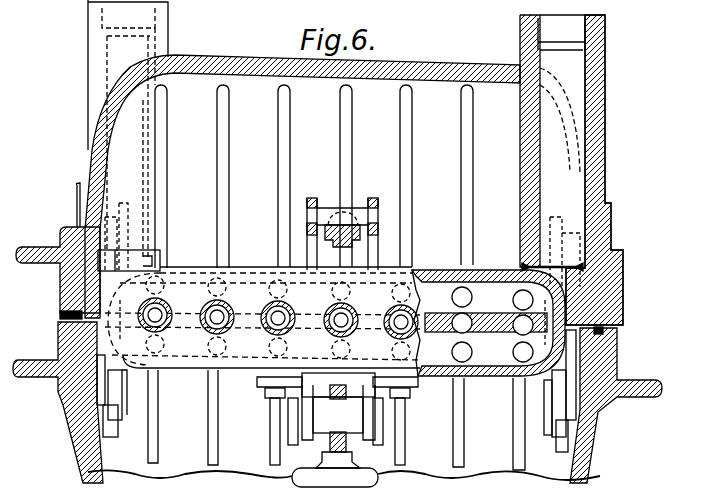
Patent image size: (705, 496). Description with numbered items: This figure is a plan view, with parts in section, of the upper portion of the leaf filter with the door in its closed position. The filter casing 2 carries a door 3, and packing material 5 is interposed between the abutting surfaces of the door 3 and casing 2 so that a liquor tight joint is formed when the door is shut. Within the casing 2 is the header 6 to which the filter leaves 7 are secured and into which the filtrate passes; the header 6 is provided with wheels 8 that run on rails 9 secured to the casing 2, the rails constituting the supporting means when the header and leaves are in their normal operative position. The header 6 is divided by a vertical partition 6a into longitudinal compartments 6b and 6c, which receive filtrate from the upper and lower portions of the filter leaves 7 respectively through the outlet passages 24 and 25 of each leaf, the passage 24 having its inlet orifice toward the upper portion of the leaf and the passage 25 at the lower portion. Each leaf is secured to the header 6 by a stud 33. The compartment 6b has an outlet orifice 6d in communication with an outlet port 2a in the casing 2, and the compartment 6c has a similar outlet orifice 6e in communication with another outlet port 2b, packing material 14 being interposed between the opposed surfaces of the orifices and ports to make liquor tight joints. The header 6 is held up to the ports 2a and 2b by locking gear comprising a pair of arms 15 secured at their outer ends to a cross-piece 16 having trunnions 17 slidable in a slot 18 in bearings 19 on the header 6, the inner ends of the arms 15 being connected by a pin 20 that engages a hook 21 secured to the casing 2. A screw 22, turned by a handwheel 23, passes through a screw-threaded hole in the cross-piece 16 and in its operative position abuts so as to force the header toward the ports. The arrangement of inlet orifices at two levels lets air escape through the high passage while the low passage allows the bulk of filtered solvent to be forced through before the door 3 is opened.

The casing 2 is at (74, 229).
The outlet port 2a is at (560, 120).
The outlet port 2b is at (143, 141).
The door 3 is at (65, 340).
The packing material 5 is at (60, 315).
The header 6 is at (335, 321).
The vertical partition 6a is at (485, 318).
The longitudinal compartment 6b is at (492, 354).
The longitudinal compartment 6c is at (478, 298).
The outlet orifice 6d is at (565, 317).
The outlet orifice 6e is at (152, 312).
The filter leaves 7 is at (278, 139).
The wheels 8 is at (122, 210).
The rails 9 is at (560, 444).
The packing material 14 is at (160, 262).
The arms 15 is at (307, 247).
The cross-piece 16 is at (345, 423).
The trunnions 17 is at (282, 413).
The slot 18 is at (296, 445).
The bearings 19 is at (288, 427).
The pin 20 is at (322, 198).
The hook 21 is at (337, 242).
The screw 22 is at (337, 403).
The handwheel 23 is at (335, 470).
The outlet passage 24 is at (222, 345).
The outlet passage 25 is at (257, 283).
The stud 33 is at (162, 311).